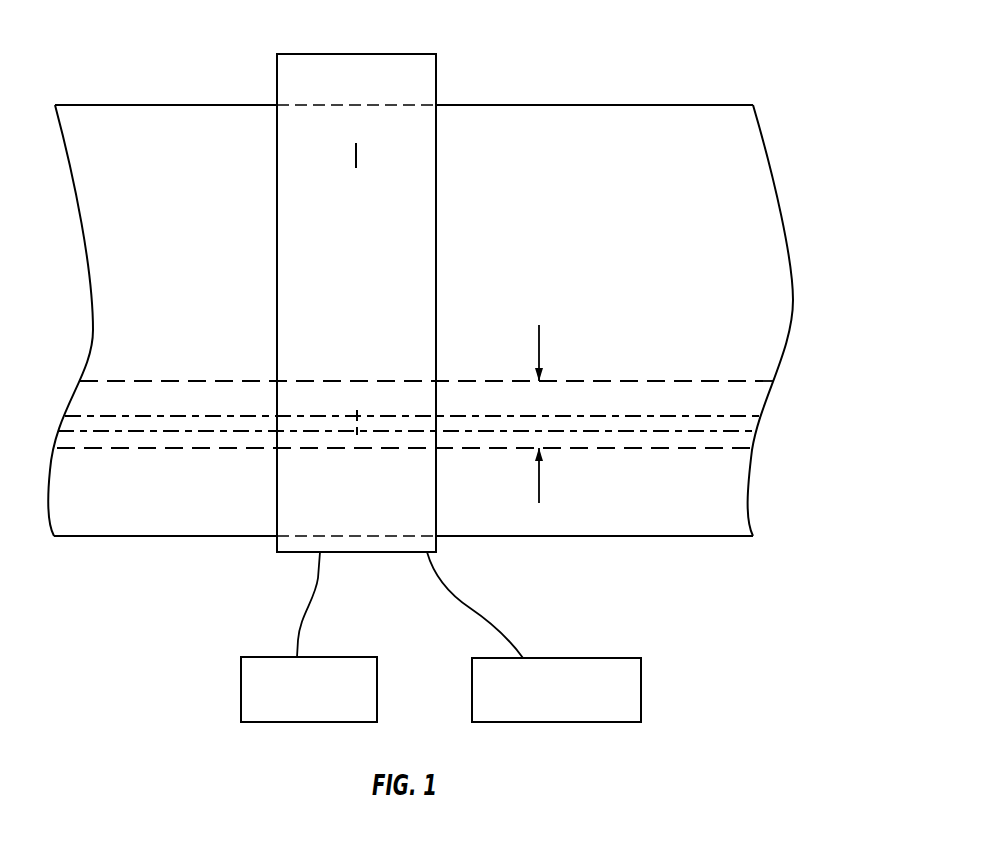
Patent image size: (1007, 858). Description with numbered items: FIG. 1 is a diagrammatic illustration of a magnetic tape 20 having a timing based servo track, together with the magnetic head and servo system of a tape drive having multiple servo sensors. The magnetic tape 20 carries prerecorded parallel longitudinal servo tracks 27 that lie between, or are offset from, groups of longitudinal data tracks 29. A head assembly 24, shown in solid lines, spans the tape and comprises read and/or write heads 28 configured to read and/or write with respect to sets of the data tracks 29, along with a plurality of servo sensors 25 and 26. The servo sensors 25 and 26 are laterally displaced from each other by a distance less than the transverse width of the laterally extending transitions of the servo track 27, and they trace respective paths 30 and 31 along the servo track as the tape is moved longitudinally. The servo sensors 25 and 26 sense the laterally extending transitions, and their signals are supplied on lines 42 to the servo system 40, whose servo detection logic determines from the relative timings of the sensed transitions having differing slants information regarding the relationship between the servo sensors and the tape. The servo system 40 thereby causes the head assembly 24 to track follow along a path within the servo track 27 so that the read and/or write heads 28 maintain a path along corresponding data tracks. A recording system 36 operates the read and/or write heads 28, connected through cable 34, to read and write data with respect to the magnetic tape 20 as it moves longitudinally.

The magnetic tape 20 is at (160, 104).
The head assembly 24 is at (277, 548).
The servo sensor 25 is at (357, 416).
The servo sensor 26 is at (357, 432).
The servo track 27 is at (539, 348).
The read and/or write heads 28 is at (354, 156).
The data tracks 29 is at (664, 188).
The path 30 is at (633, 422).
The path 31 is at (633, 422).
The head cable 34 is at (294, 640).
The recording system 36 is at (241, 689).
The servo system 40 is at (641, 688).
The lines 42 is at (467, 603).